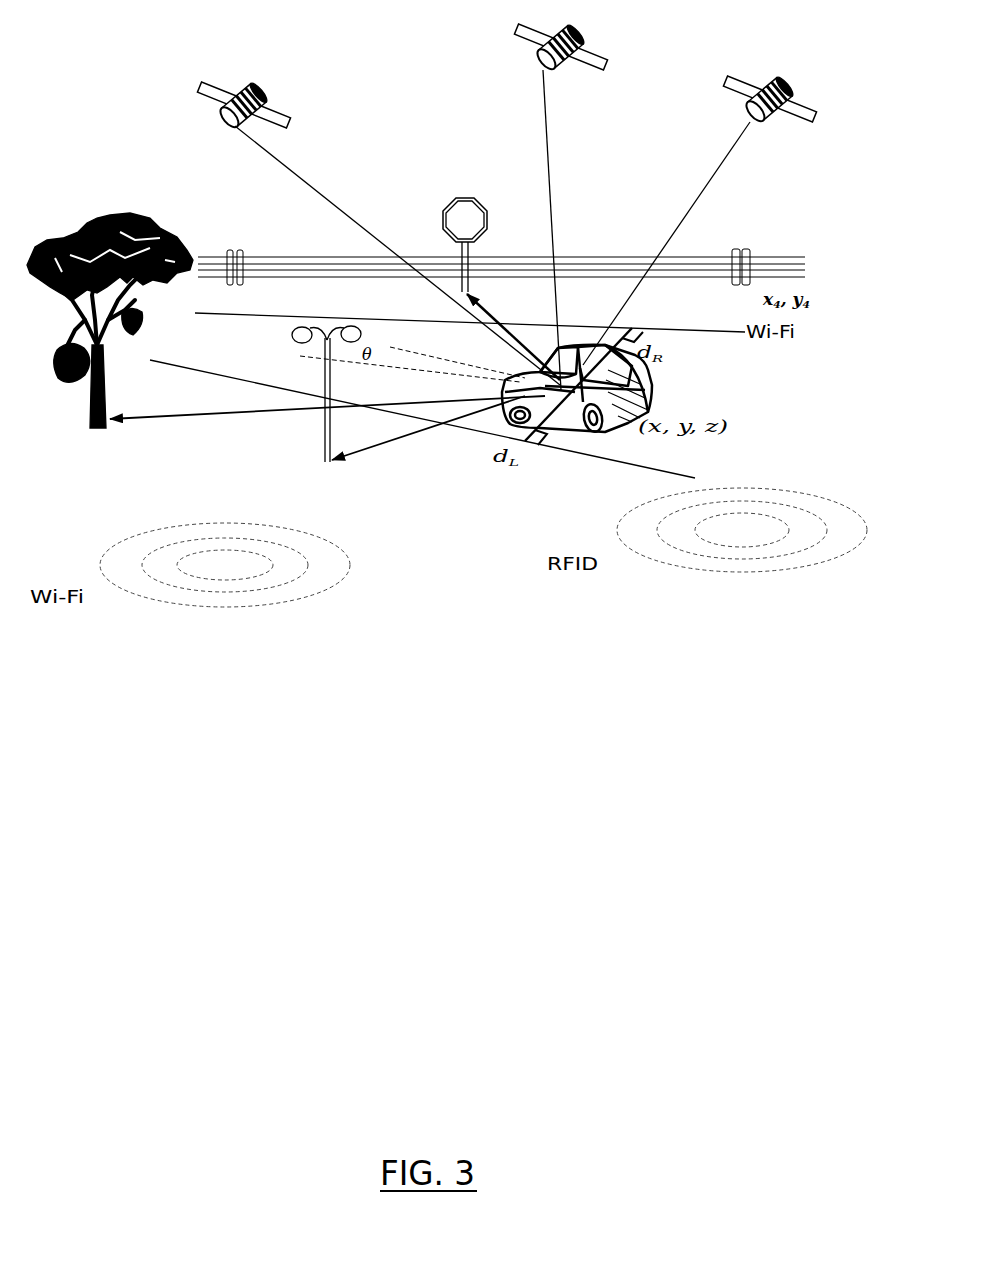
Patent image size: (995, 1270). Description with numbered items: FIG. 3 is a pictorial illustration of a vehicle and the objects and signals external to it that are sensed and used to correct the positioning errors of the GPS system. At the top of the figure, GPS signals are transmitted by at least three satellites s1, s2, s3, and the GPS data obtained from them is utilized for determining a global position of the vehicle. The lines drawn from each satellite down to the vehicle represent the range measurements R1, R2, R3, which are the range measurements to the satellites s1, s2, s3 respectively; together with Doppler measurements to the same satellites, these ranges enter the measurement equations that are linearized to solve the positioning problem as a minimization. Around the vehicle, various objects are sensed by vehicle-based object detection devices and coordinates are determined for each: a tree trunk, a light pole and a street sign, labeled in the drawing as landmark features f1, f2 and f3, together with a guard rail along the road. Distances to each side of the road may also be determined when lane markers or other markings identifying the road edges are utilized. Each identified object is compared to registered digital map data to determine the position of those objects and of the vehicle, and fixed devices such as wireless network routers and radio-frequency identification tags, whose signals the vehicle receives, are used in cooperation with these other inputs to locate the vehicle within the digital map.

The first satellite s1 is at (244, 102).
The second satellite s2 is at (564, 47).
The third satellite s3 is at (770, 99).
The range measurement to the first satellite R1 is at (397, 255).
The range measurement to the second satellite R2 is at (564, 230).
The range measurement to the third satellite R3 is at (666, 243).
The first landmark feature (tree) f1 is at (286, 325).
The second landmark feature (lamp post) f2 is at (407, 393).
The third landmark feature (stop sign) f3 is at (501, 282).